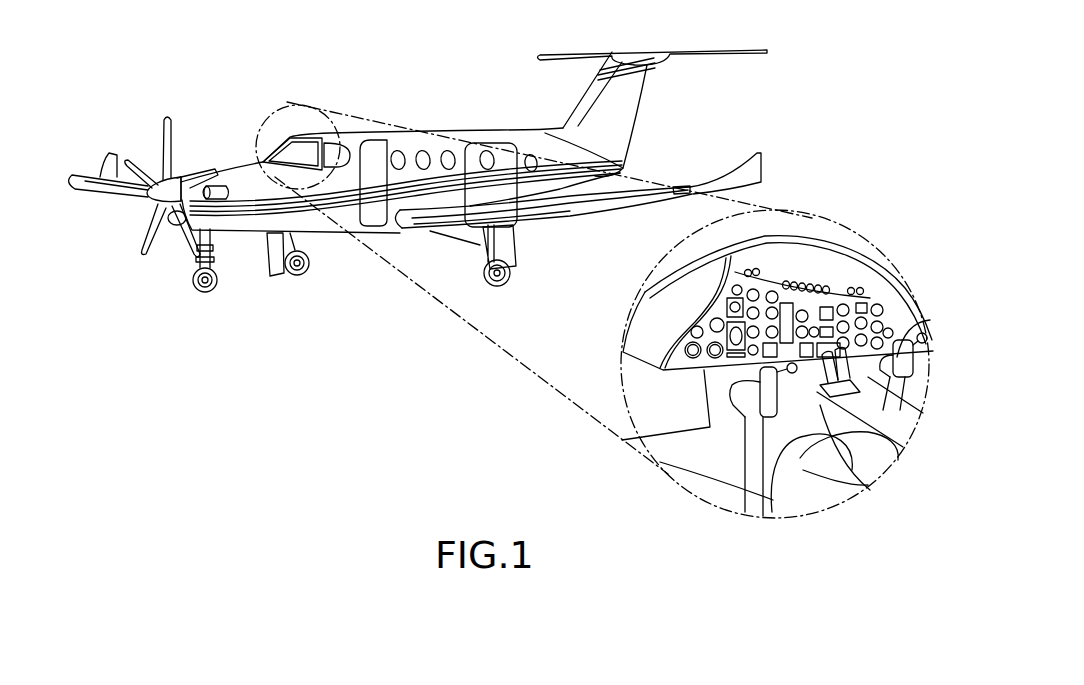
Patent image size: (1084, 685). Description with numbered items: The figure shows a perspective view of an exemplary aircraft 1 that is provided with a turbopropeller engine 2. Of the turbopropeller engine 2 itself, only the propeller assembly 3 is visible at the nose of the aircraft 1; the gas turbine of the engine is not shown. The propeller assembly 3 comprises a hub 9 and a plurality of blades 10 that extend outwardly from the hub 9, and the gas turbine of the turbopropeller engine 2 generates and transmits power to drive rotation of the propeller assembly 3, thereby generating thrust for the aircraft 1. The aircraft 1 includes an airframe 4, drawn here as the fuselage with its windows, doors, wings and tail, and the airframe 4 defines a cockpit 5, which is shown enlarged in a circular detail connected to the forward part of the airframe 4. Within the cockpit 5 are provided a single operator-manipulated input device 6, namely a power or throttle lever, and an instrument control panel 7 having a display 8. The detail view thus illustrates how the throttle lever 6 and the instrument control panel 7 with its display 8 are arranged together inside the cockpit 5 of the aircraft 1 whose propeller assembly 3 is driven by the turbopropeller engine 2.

The aircraft 1 is at (163, 310).
The turbopropeller engine 2 is at (217, 297).
The propeller assembly 3 is at (148, 225).
The airframe 4 is at (438, 131).
The cockpit 5 is at (777, 339).
The operator-manipulated input device 6 is at (822, 362).
The instrument control panel 7 is at (780, 281).
The display 8 is at (800, 300).
The hub 9 is at (158, 203).
The blades 10 is at (128, 166).